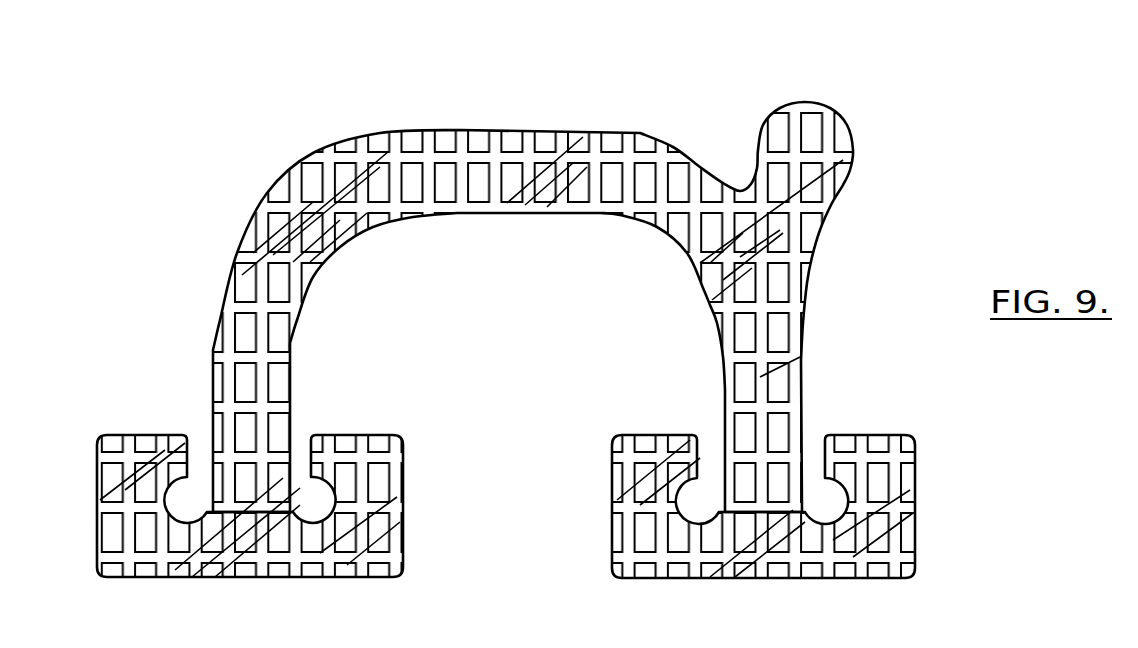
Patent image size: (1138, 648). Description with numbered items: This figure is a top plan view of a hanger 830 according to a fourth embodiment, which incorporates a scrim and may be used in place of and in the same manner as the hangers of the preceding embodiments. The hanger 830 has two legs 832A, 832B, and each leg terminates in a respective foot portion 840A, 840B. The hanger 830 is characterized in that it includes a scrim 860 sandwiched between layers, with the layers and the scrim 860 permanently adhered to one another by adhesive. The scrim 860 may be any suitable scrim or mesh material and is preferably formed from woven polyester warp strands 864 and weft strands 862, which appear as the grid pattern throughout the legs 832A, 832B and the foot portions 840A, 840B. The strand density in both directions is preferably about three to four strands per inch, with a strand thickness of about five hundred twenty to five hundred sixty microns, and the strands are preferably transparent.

The hanger 830 is at (639, 113).
The leg 832A is at (268, 213).
The leg 832B is at (810, 280).
The foot portion 840A is at (273, 575).
The foot portion 840B is at (740, 572).
The scrim 860 is at (456, 160).
The weft strands 862 is at (800, 357).
The warp strands 864 is at (745, 305).